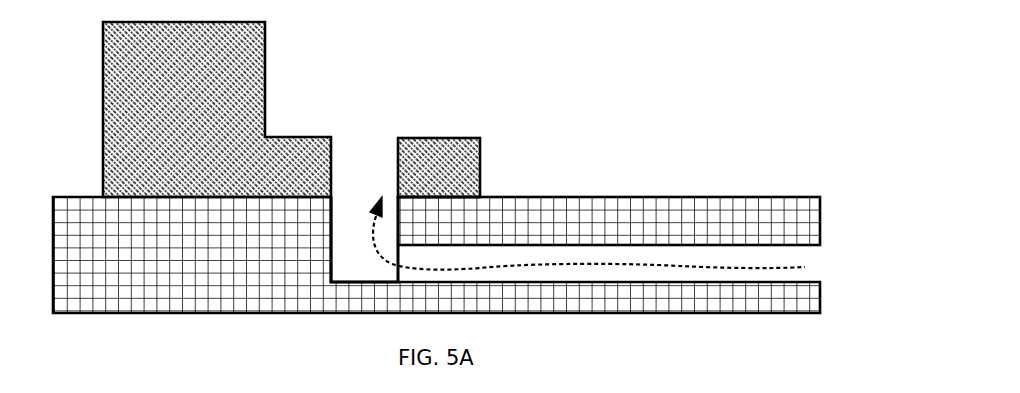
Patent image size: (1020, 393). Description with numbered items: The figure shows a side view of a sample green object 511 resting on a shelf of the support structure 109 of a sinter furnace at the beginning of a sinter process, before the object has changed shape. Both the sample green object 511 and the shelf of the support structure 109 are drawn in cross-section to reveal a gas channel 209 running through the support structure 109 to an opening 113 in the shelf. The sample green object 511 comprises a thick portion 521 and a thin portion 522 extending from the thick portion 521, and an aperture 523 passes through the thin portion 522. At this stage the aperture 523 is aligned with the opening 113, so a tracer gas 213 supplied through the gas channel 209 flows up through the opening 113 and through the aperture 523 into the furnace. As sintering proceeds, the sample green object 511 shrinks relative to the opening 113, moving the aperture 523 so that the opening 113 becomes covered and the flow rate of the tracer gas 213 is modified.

The support structure 109 is at (692, 213).
The opening 113 is at (412, 193).
The gas channel 209 is at (377, 275).
The tracer gas 213 is at (806, 266).
The sample green object 511 is at (256, 109).
The thick portion 521 is at (218, 98).
The thin portion 522 is at (457, 171).
The aperture 523 is at (348, 145).